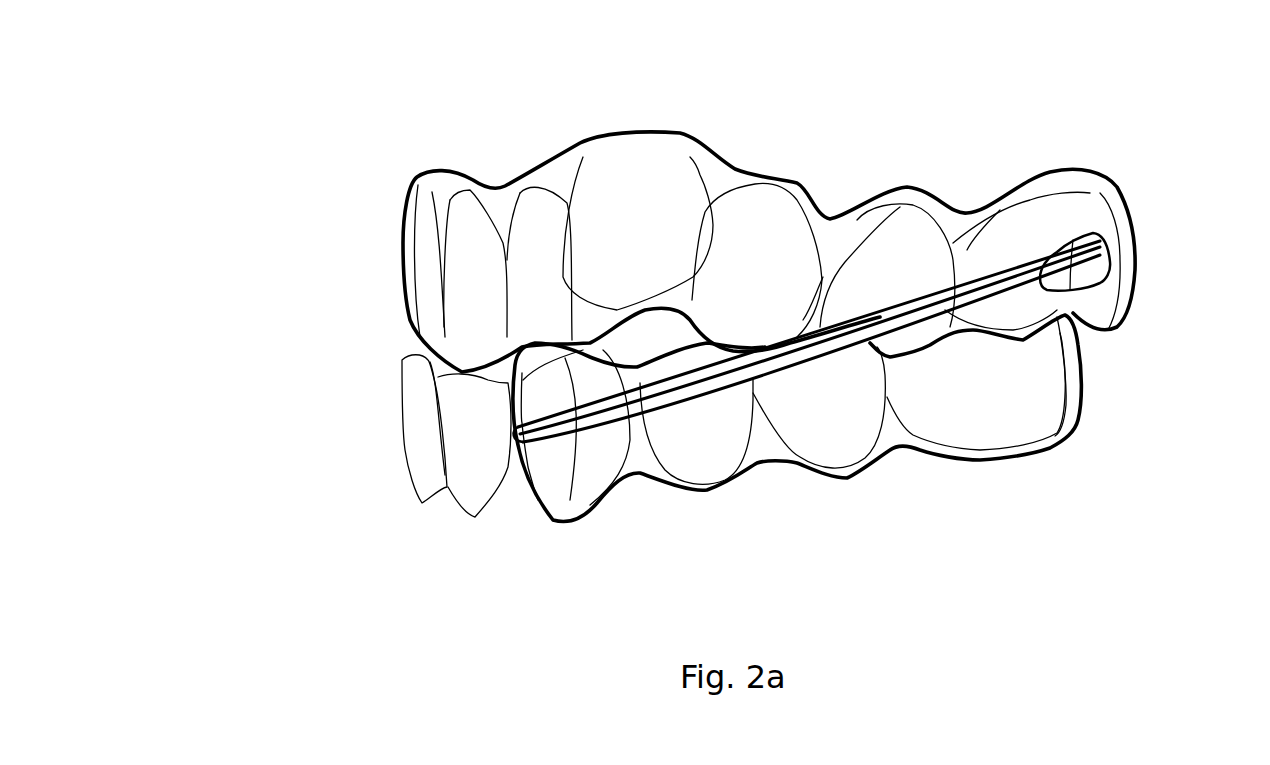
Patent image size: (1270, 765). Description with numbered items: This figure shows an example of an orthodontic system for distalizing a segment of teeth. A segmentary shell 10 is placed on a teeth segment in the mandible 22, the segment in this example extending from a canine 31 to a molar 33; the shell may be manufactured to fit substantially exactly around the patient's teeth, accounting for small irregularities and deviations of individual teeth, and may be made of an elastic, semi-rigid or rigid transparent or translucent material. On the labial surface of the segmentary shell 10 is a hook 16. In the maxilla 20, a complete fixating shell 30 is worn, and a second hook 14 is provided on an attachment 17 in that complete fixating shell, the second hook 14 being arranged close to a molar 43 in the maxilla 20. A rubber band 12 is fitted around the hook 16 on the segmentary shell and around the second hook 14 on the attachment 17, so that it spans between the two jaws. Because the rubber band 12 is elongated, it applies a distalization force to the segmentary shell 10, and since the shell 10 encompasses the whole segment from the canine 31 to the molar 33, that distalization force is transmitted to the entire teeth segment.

The segmentary shell 10 is at (863, 473).
The rubber band 12 is at (850, 320).
The second hook 14 is at (1087, 240).
The hook 16 is at (557, 470).
The attachment 17 is at (1137, 257).
The maxilla 20 is at (363, 237).
The mandible 22 is at (362, 468).
The complete fixating shell 30 is at (593, 137).
The canine 31 is at (592, 487).
The molar 33 is at (1030, 423).
The molar 43 is at (1007, 237).